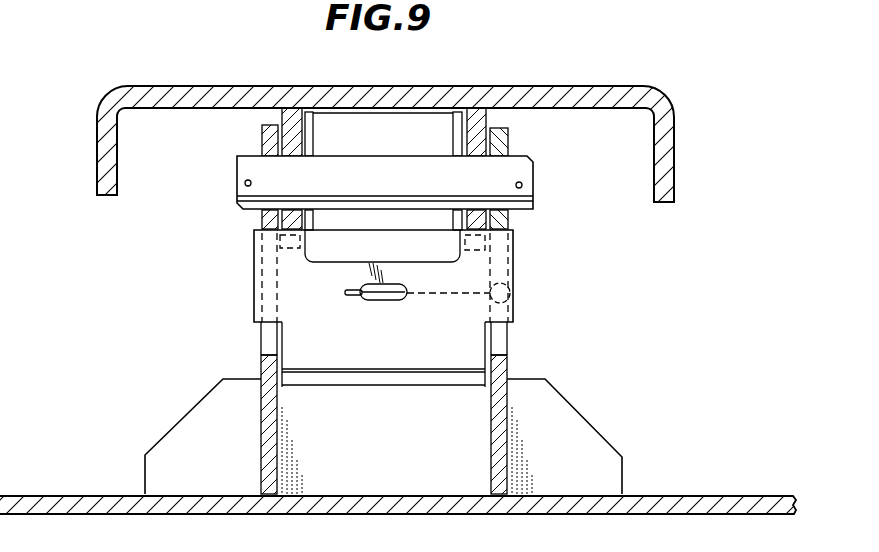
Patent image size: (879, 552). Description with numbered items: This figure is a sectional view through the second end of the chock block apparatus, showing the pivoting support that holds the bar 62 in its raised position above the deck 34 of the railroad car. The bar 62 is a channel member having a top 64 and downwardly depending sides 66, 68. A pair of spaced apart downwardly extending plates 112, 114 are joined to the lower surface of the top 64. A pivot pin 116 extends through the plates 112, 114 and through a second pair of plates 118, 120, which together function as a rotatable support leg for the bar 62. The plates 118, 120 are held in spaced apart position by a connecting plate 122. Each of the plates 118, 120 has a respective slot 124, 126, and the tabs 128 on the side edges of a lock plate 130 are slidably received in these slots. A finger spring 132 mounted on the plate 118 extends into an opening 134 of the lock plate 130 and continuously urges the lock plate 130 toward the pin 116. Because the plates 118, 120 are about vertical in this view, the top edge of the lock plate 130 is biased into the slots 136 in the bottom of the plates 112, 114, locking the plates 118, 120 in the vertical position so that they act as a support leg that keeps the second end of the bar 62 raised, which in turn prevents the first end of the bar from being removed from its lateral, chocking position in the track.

The bar 62 is at (553, 68).
The top 64 is at (220, 86).
The side 66 is at (97, 155).
The side 68 is at (675, 155).
The plate 112 is at (480, 132).
The plate 114 is at (290, 127).
The pivot pin 116 is at (243, 206).
The plate 118 is at (502, 372).
The plate 120 is at (268, 363).
The plate 122 is at (583, 443).
The slot 124 is at (503, 342).
The slot 126 is at (270, 335).
The tab 128 is at (262, 275).
The lock plate 130 is at (393, 338).
The finger spring 132 is at (464, 301).
The opening 134 is at (367, 285).
The slot 136 is at (297, 219).
The deck 34 is at (440, 515).